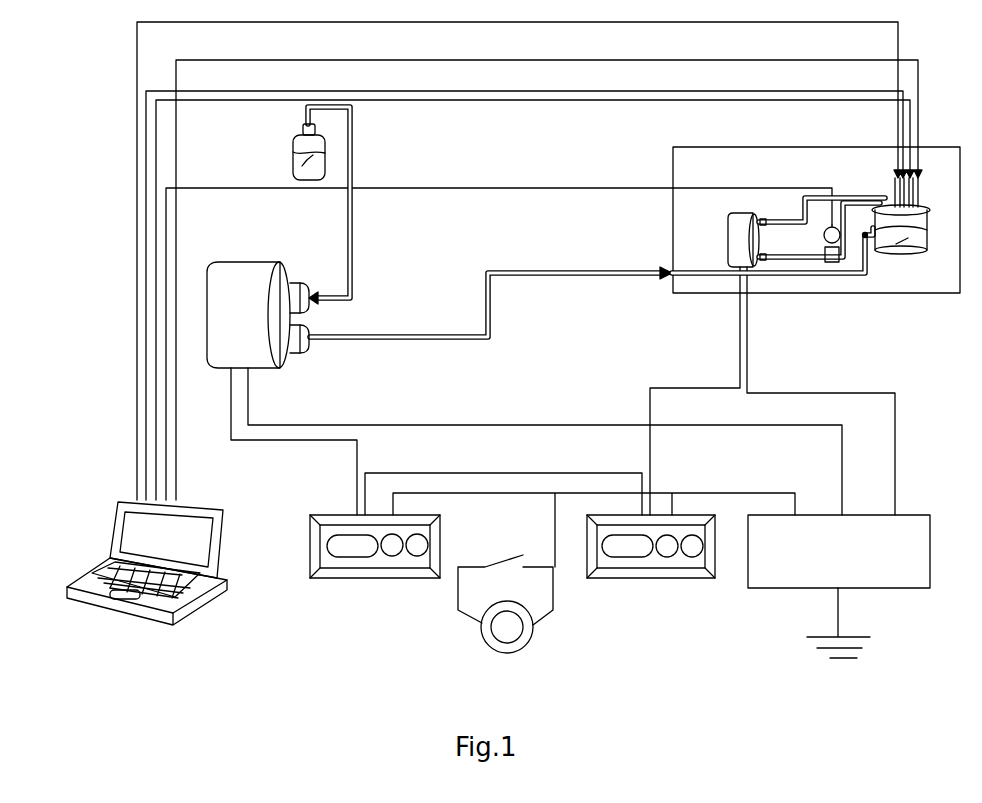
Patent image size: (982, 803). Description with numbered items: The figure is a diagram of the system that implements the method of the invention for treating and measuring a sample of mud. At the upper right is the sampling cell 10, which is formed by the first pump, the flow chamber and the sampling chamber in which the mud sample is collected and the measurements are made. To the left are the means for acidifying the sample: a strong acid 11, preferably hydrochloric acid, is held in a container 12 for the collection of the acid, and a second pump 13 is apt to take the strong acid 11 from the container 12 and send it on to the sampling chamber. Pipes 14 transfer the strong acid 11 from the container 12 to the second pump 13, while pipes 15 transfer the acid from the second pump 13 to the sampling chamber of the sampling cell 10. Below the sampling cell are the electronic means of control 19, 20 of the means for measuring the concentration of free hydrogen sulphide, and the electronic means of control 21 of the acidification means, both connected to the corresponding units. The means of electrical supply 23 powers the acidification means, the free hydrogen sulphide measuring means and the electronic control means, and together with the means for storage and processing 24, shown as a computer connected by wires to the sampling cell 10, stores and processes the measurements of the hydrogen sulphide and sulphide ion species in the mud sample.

The sampling cell 10 is at (810, 295).
The strong acid 11 is at (303, 132).
The container 12 is at (293, 164).
The second pump 13 is at (240, 280).
The pipes 14 is at (352, 288).
The pipes 15 is at (490, 303).
The electronic means of control 19 is at (653, 563).
The electronic means of control 20 is at (497, 652).
The electronic means of control 21 is at (368, 562).
The means of electrical supply 23 is at (880, 562).
The means for the storage and processing 24 is at (163, 600).